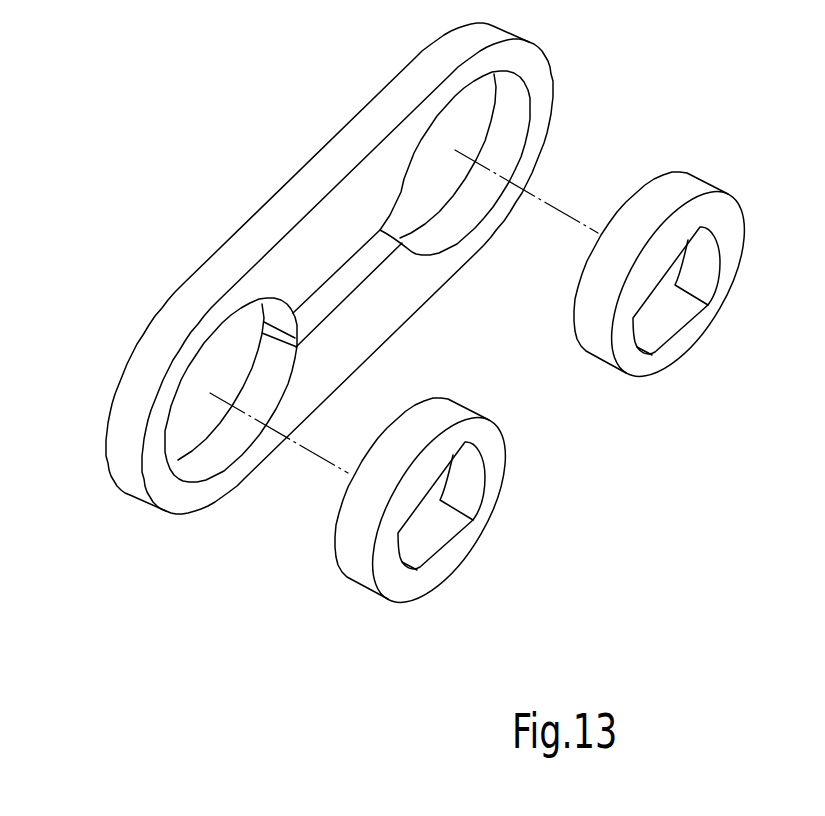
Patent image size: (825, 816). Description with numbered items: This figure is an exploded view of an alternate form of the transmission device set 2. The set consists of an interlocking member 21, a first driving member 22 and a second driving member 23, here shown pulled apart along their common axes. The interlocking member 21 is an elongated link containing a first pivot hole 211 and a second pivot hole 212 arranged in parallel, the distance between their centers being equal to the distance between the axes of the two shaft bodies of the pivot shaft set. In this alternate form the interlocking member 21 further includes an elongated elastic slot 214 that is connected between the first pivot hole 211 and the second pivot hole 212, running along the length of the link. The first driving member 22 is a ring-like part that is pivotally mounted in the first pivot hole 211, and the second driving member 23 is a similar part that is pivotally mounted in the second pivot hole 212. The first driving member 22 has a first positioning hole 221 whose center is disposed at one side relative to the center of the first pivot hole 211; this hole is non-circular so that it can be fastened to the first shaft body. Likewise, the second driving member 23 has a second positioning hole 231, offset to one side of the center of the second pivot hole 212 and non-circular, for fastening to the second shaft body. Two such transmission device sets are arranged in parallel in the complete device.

The transmission device set 2 is at (247, 152).
The interlocking member 21 is at (390, 102).
The first pivot hole 211 is at (517, 105).
The second pivot hole 212 is at (265, 372).
The elongated elastic slot 214 is at (355, 277).
The first driving member 22 is at (665, 187).
The first positioning hole 221 is at (708, 260).
The second driving member 23 is at (400, 582).
The second positioning hole 231 is at (440, 530).